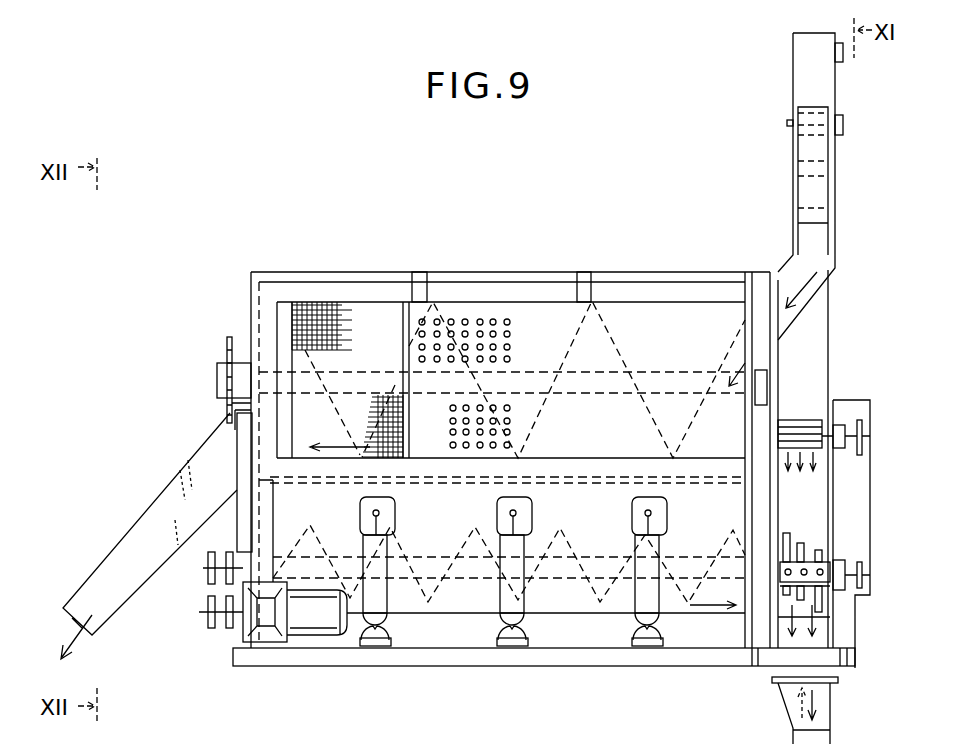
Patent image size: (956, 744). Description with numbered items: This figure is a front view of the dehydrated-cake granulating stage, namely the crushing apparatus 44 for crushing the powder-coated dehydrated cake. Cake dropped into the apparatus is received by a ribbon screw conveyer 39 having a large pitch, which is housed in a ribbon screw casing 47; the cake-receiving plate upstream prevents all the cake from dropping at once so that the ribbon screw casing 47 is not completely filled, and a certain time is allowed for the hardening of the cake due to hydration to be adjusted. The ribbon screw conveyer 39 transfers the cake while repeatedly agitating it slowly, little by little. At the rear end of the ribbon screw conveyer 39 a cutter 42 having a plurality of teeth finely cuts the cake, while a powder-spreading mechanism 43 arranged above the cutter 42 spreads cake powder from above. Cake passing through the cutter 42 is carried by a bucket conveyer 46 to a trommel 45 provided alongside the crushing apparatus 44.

The ribbon screw conveyer 39 is at (410, 590).
The cutter 42 is at (803, 543).
The powder-spreading mechanism 43 is at (800, 420).
The crushing apparatus 44 is at (326, 680).
The trommel 45 is at (470, 302).
The bucket conveyer 46 is at (800, 170).
The ribbon screw casing 47 is at (583, 600).